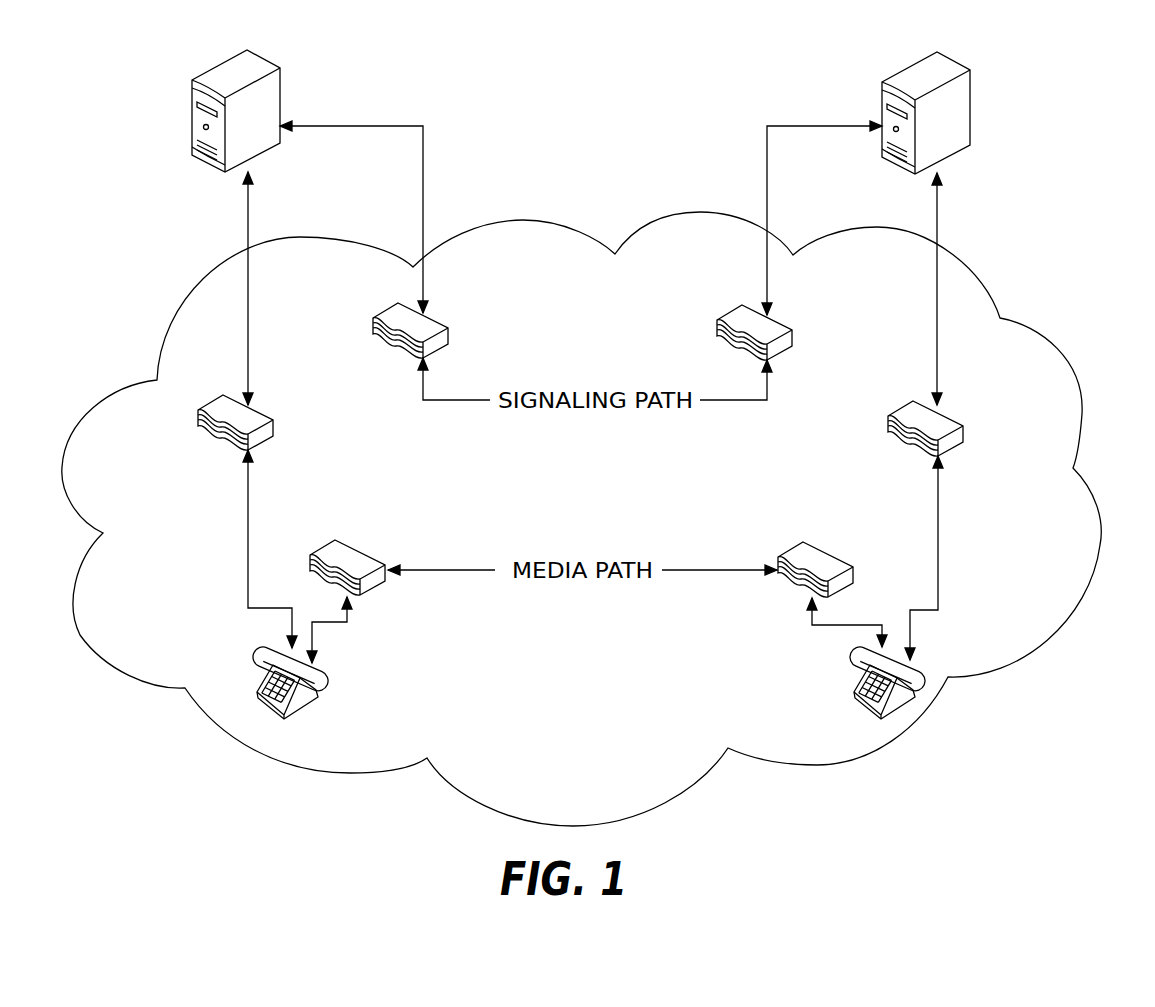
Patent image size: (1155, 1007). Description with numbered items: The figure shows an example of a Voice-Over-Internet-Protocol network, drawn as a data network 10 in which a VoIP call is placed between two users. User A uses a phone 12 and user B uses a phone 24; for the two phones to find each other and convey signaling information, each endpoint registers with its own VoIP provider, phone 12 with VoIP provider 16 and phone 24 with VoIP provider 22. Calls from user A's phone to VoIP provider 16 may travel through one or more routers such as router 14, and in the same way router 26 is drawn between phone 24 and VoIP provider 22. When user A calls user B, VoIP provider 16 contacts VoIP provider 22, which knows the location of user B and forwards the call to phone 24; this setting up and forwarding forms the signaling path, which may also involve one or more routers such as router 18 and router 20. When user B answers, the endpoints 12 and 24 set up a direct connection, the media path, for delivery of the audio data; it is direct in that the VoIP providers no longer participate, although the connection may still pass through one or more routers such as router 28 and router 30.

The data network 10 is at (657, 220).
The phone 12 is at (302, 702).
The router 14 is at (250, 420).
The VoIP provider 16 is at (253, 62).
The router 18 is at (433, 333).
The router 20 is at (737, 318).
The VoIP provider 22 is at (945, 66).
The phone 24 is at (867, 707).
The router 26 is at (910, 407).
The router 28 is at (353, 560).
The router 30 is at (818, 560).